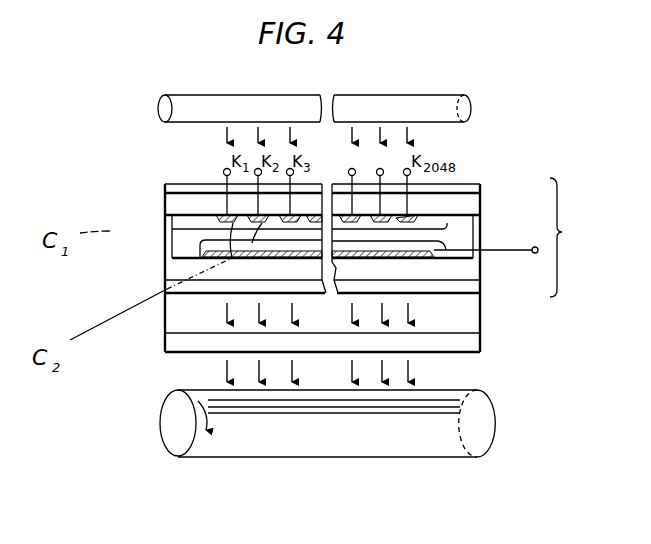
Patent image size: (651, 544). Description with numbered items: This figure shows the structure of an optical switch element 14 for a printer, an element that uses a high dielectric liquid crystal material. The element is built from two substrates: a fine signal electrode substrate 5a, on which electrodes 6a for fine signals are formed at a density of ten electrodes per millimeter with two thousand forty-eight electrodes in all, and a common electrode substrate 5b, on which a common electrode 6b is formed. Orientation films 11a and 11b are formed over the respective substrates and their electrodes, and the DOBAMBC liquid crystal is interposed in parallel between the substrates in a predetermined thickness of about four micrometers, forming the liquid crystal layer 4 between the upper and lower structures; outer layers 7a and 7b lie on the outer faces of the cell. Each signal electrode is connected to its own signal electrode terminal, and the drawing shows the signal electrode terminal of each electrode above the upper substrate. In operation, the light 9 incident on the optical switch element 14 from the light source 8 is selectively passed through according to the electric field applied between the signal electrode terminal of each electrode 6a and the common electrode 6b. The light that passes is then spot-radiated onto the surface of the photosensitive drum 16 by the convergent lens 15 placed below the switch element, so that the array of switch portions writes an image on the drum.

The liquid crystal layer 4 is at (190, 239).
The fine signal electrode substrate 5a is at (470, 203).
The common electrode substrate 5b is at (470, 270).
The electrodes for fine signals 6a is at (420, 218).
The common electrode 6b is at (205, 258).
The upper polarizer 7a is at (478, 188).
The lower polarizer 7b is at (473, 287).
The light source 8 is at (473, 110).
The light 9 is at (317, 254).
The orientation film 11a is at (214, 235).
The orientation film 11b is at (468, 251).
The optical switch element 14 is at (567, 237).
The convergent lens 15 is at (470, 347).
The photosensitive drum 16 is at (497, 423).